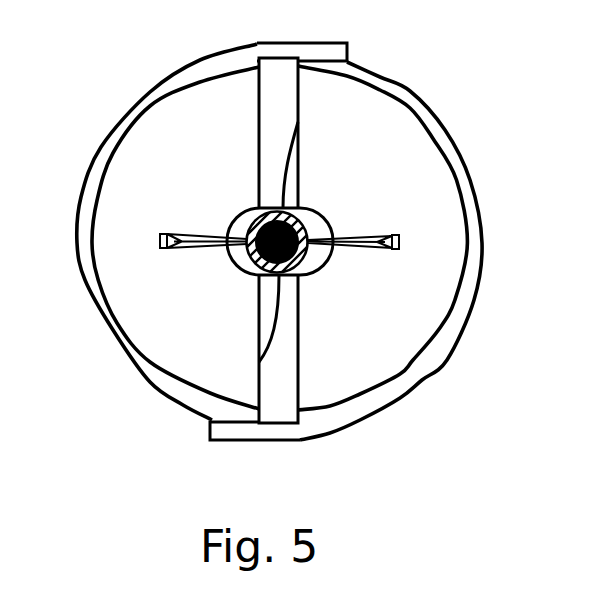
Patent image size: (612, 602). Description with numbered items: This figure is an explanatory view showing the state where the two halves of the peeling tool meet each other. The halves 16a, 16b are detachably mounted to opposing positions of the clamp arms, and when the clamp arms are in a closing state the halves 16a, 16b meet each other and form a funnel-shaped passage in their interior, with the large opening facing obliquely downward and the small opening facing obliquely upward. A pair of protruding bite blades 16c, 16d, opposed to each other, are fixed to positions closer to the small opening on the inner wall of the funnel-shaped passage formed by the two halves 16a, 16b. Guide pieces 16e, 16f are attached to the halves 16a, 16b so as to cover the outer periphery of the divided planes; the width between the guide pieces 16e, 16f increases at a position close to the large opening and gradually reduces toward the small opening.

The half of the peeling tool 16a is at (173, 170).
The half of the peeling tool 16b is at (424, 305).
The protruding bite blade 16c is at (203, 245).
The protruding bite blade 16d is at (365, 233).
The guide piece 16e is at (308, 50).
The guide piece 16f is at (247, 430).